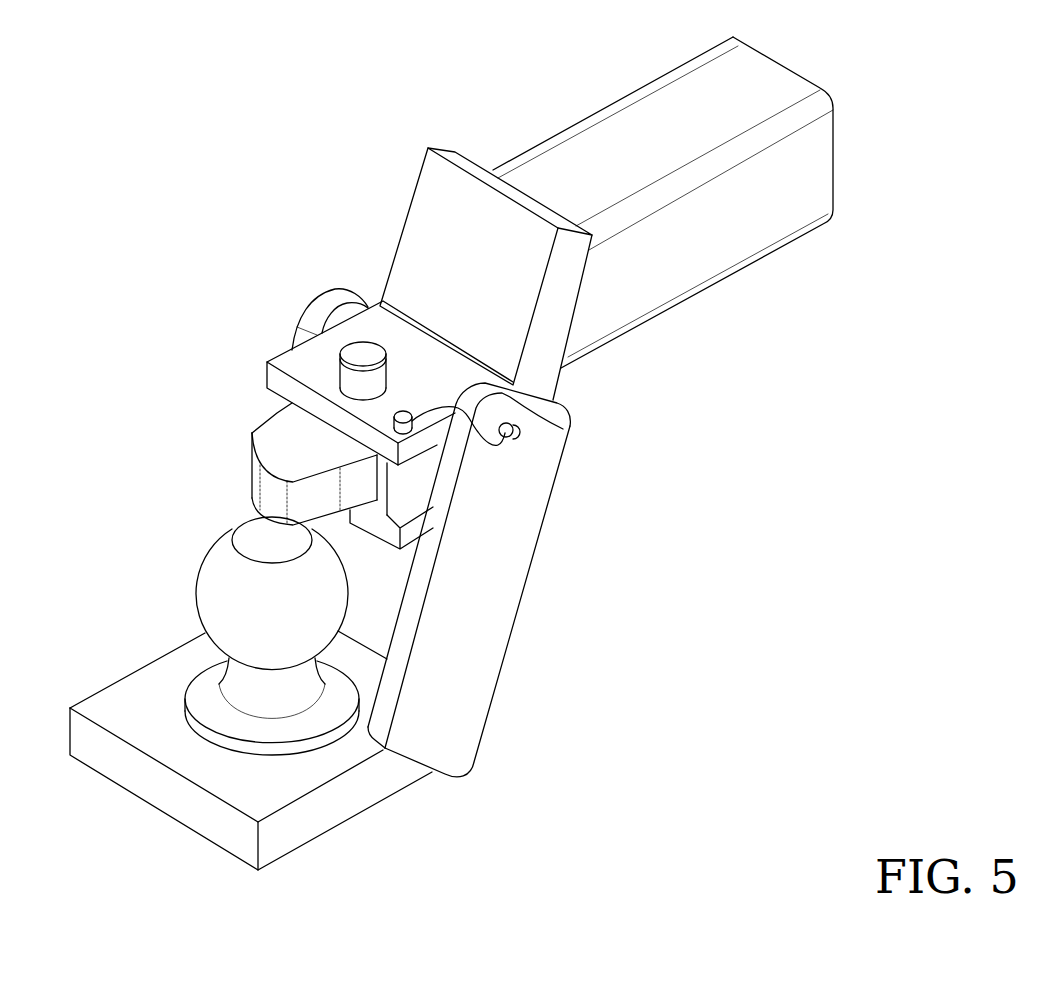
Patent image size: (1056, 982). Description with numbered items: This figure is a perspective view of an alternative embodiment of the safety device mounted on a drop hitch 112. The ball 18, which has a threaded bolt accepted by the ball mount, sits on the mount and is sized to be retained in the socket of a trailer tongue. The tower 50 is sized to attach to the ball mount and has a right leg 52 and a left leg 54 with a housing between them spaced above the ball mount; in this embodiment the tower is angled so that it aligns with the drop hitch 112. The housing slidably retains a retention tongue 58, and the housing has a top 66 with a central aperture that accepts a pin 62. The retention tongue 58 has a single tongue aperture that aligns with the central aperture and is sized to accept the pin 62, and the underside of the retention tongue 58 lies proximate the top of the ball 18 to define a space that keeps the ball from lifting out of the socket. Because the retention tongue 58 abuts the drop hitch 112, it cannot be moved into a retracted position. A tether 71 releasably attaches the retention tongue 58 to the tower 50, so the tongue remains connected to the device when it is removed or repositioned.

The ball 18 is at (213, 583).
The tower 50 is at (484, 580).
The right leg 52 is at (522, 530).
The left leg 54 is at (253, 512).
The retention tongue 58 is at (263, 442).
The pin 62 is at (358, 354).
The top 66 is at (368, 315).
The tether 71 is at (567, 433).
The drop hitch 112 is at (542, 380).